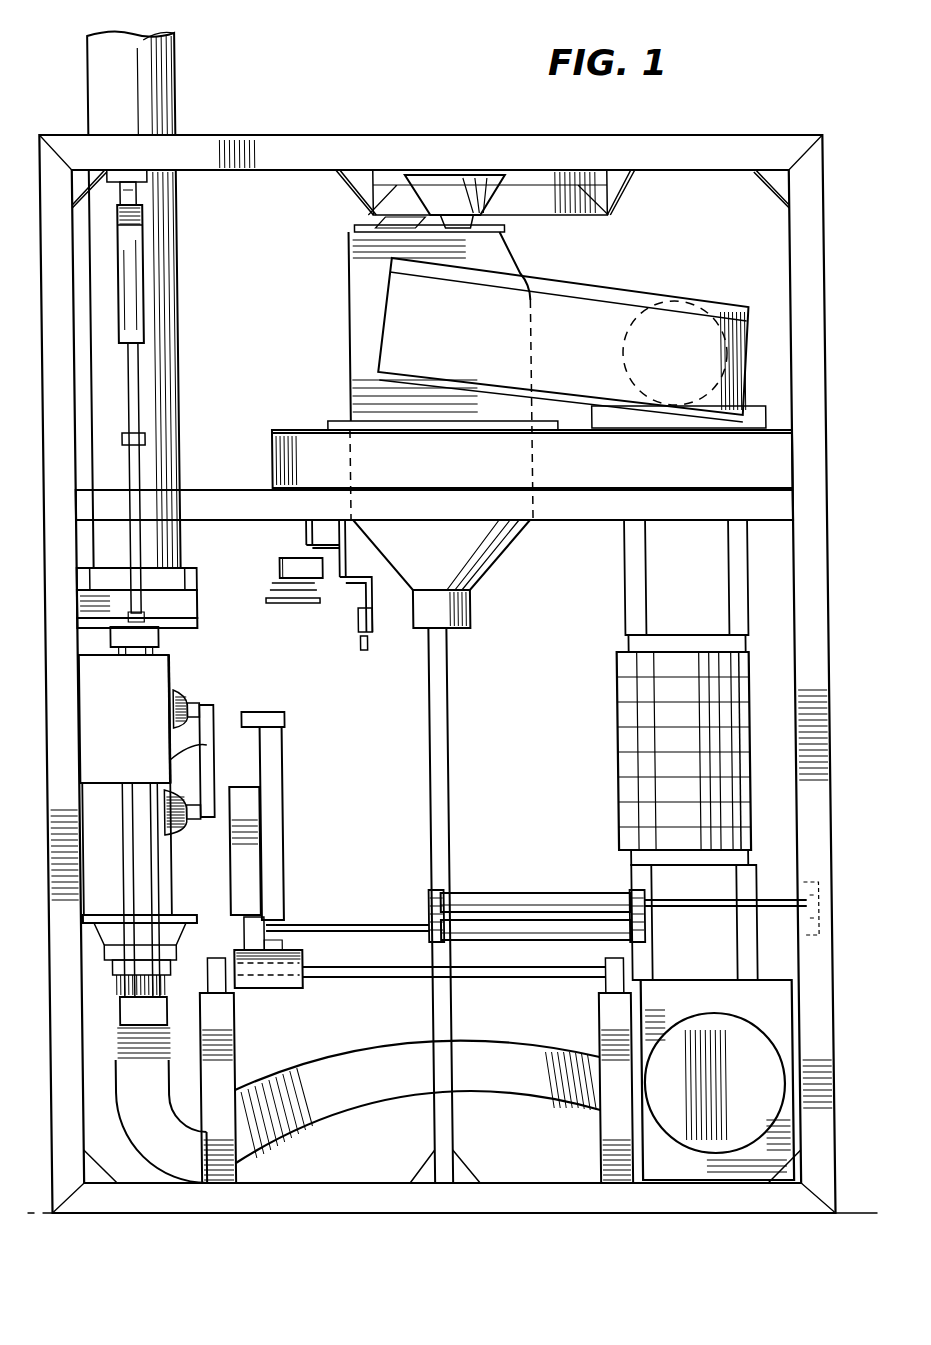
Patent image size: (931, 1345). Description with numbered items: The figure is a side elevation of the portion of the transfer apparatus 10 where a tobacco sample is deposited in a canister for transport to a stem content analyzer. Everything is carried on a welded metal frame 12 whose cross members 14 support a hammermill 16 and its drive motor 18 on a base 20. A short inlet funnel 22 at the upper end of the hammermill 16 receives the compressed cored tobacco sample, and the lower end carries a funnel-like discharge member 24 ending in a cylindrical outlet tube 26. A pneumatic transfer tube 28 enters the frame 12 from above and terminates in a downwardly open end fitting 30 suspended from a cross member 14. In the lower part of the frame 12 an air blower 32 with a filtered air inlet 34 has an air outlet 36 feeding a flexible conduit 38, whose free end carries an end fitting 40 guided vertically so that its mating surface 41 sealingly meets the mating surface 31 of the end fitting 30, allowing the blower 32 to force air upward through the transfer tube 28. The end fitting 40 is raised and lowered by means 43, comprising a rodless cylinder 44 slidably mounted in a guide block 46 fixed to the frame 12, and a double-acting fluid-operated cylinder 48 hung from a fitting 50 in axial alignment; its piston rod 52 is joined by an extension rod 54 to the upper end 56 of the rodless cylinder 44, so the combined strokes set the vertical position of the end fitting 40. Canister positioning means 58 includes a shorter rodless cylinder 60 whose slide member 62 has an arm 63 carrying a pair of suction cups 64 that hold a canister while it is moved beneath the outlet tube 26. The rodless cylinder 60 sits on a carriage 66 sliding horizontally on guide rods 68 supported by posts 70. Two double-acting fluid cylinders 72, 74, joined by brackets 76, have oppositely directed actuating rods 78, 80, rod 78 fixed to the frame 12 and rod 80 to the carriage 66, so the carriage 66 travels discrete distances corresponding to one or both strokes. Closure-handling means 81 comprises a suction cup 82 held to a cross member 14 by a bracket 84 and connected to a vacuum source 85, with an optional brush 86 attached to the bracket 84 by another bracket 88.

The transfer apparatus 10 is at (270, 44).
The frame 12 is at (316, 152).
The cross members 14 is at (594, 505).
The hammermill 16 is at (355, 262).
The drive motor 18 is at (680, 300).
The base 20 is at (292, 452).
The inlet funnel 22 is at (470, 200).
The discharge member 24 is at (485, 548).
The outlet tube 26 is at (470, 608).
The pneumatic transfer tube 28 is at (165, 68).
The end fitting 30 is at (185, 606).
The mating surface 31 is at (192, 628).
The air blower 32 is at (704, 990).
The filtered air inlet 34 is at (725, 1025).
The air outlet 36 is at (594, 1118).
The flexible conduit 38 is at (520, 1060).
The end fitting 40 is at (188, 922).
The mating surface 41 is at (168, 905).
The means for vertically moving the fitting 43 is at (196, 396).
The rodless cylinder 44 is at (128, 810).
The guide block 46 is at (165, 672).
The fluid-operated cylinder 48 is at (135, 282).
The fitting 50 is at (150, 186).
The piston rod 52 is at (137, 382).
The extension rod 54 is at (136, 465).
The upper end 56 is at (128, 655).
The means for moving the sample canister 58 is at (322, 738).
The rodless cylinder 60 is at (282, 810).
The slide member 62 is at (262, 872).
The arm 63 is at (168, 756).
The suction cups 64 is at (178, 836).
The carriage 66 is at (304, 956).
The guide rods 68 is at (490, 970).
The posts 70 is at (596, 1013).
The fluid cylinder 72 is at (508, 900).
The fluid cylinder 74 is at (496, 935).
The brackets 76 is at (625, 895).
The actuating rod 78 is at (704, 908).
The actuating rod 80 is at (378, 928).
The means for removing and replacing the end closure 81 is at (296, 627).
The suction cup 82 is at (272, 592).
The bracket 84 is at (340, 548).
The vacuum source 85 is at (282, 562).
The brush 86 is at (367, 642).
The bracket 88 is at (372, 612).